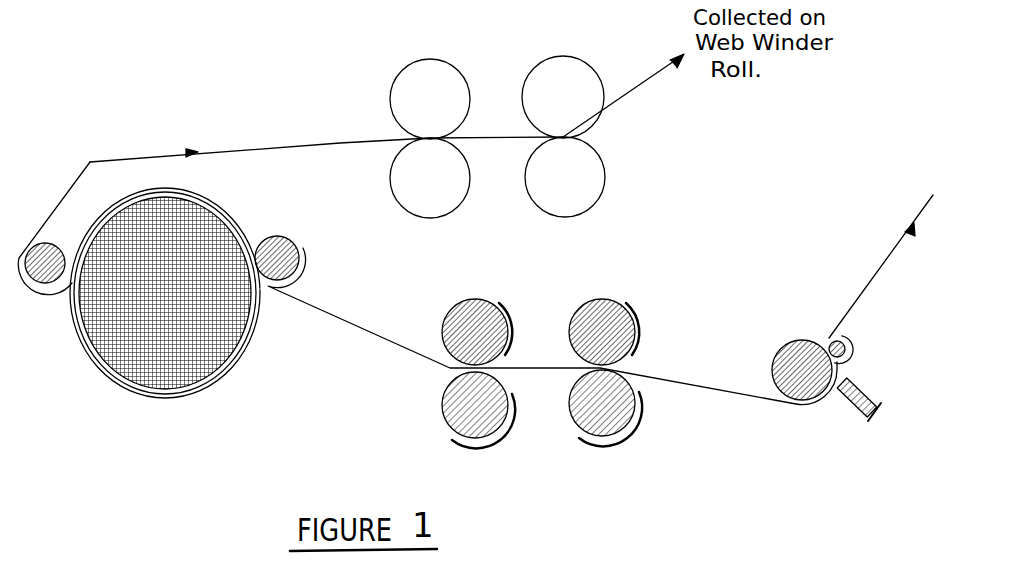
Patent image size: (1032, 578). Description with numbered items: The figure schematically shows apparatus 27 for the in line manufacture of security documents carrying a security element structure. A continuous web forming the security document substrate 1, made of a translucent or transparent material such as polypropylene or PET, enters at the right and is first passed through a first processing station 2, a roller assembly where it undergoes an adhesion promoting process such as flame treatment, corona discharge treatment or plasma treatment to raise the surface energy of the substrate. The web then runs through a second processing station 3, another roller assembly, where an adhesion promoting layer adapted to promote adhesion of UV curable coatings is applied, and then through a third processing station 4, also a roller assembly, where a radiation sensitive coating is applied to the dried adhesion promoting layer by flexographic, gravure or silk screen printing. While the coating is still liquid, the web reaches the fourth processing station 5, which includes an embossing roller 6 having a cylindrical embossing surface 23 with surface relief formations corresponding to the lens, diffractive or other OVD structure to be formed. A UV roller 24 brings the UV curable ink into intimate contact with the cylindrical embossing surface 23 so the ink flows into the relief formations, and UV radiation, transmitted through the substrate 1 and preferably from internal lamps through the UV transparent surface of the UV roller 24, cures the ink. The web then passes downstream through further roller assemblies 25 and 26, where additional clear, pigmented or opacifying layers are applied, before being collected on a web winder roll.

The security document substrate 1 is at (108, 159).
The first processing station 2 is at (835, 398).
The second processing station 3 is at (637, 391).
The third processing station 4 is at (440, 374).
The fourth processing station 5 is at (268, 291).
The embossing roller 6 is at (180, 297).
The cylindrical embossing surface 23 is at (227, 376).
The UV roller 24 is at (300, 255).
The further roller assembly 25 is at (390, 128).
The further roller assembly 26 is at (597, 142).
The apparatus 27 is at (228, 100).